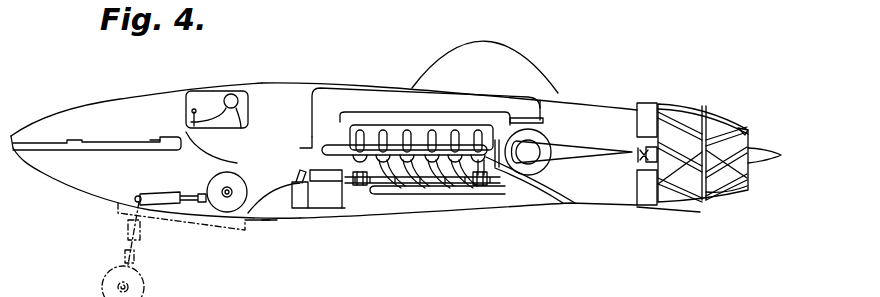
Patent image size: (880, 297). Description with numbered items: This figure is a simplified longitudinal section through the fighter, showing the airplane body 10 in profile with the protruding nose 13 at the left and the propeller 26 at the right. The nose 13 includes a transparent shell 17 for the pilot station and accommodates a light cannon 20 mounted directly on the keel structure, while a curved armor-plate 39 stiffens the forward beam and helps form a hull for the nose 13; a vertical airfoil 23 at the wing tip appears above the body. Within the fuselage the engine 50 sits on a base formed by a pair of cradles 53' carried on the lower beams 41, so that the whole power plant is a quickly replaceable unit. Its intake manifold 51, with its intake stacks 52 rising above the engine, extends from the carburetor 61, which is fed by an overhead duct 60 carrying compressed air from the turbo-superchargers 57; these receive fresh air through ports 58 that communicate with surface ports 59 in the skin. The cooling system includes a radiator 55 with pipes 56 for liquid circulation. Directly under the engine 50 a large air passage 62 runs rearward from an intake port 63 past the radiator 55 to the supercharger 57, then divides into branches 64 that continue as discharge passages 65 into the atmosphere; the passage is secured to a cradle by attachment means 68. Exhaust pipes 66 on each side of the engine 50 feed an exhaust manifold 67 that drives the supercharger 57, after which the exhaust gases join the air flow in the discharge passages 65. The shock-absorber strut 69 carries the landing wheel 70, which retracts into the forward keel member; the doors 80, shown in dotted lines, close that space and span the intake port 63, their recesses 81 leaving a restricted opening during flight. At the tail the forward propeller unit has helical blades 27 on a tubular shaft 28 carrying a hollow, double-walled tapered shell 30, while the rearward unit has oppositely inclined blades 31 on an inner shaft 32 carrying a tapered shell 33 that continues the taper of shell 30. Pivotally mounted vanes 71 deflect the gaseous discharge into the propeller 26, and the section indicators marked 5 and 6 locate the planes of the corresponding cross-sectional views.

The airplane body 10 is at (263, 80).
The nose 13 is at (95, 100).
The transparent shell 17 is at (141, 104).
The light cannon 20 is at (40, 142).
The vertical airfoils 23 is at (483, 50).
The propeller 26 is at (733, 111).
The helical blades 27 is at (686, 120).
The tubular shaft 28 is at (643, 160).
The tapered shell 30 is at (662, 209).
The blades 31 is at (746, 130).
The inner shaft 32 is at (644, 153).
The tapered shell 33 is at (734, 190).
The armor-plate 39 is at (45, 176).
The lower beams 41 is at (312, 170).
The engine 50 is at (441, 121).
The intake manifold 51 is at (329, 146).
The intake stacks 52 is at (388, 132).
The cradles 53' is at (438, 212).
The radiator 55 is at (298, 200).
The pipes 56 is at (323, 195).
The turbo-superchargers 57 is at (556, 134).
The ports 58 is at (509, 119).
The surface ports 59 is at (547, 100).
The overhead duct 60 is at (373, 92).
The carburetor 61 is at (311, 130).
The air passage 62 is at (372, 200).
The intake port 63 is at (258, 219).
The branches 64 is at (543, 193).
The discharge passages 65 is at (587, 161).
The exhaust pipes 66 is at (413, 193).
The exhaust manifold 67 is at (453, 197).
The attachment means 68 is at (478, 193).
The shock-absorber strut 69 is at (163, 203).
The landing wheel 70 is at (213, 203).
The vanes 71 is at (646, 117).
The doors 80 is at (117, 212).
The recesses 81 is at (266, 222).
The section line of FIG. 5 is at (678, 103).
The section line of FIG. 6 is at (585, 100).